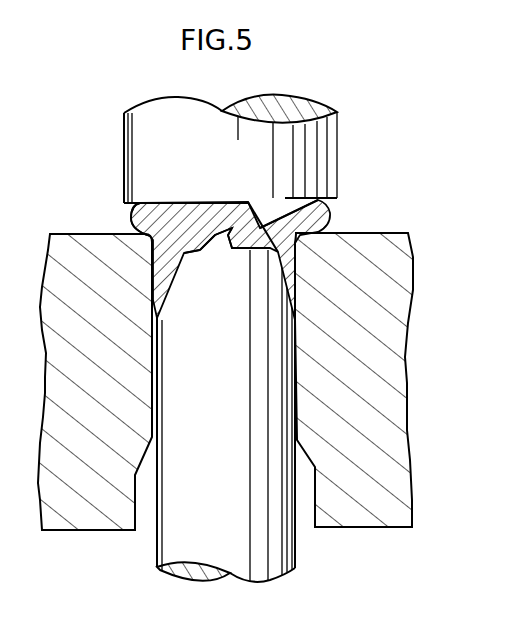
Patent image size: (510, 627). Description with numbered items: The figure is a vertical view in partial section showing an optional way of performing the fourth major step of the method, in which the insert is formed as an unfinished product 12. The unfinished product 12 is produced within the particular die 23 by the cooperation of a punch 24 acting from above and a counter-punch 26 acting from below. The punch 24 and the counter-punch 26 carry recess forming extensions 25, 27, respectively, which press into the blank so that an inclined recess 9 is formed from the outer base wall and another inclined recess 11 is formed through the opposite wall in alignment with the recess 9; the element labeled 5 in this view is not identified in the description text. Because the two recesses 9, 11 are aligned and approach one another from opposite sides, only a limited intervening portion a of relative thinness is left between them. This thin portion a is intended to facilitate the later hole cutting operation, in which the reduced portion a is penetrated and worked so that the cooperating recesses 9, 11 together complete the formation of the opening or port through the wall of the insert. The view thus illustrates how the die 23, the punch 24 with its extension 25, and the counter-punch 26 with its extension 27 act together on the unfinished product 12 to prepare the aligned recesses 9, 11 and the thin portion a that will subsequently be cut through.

The collar flange 5 is at (131, 224).
The recess 9 is at (318, 222).
The inclined recess 11 is at (213, 233).
The unfinished product 12 is at (283, 222).
The die 23 is at (385, 476).
The punch 24 is at (323, 134).
The recess forming extension 25 is at (258, 213).
The counter-punch 26 is at (280, 555).
The recess forming extension 27 is at (218, 245).
The intervening portion a is at (243, 241).